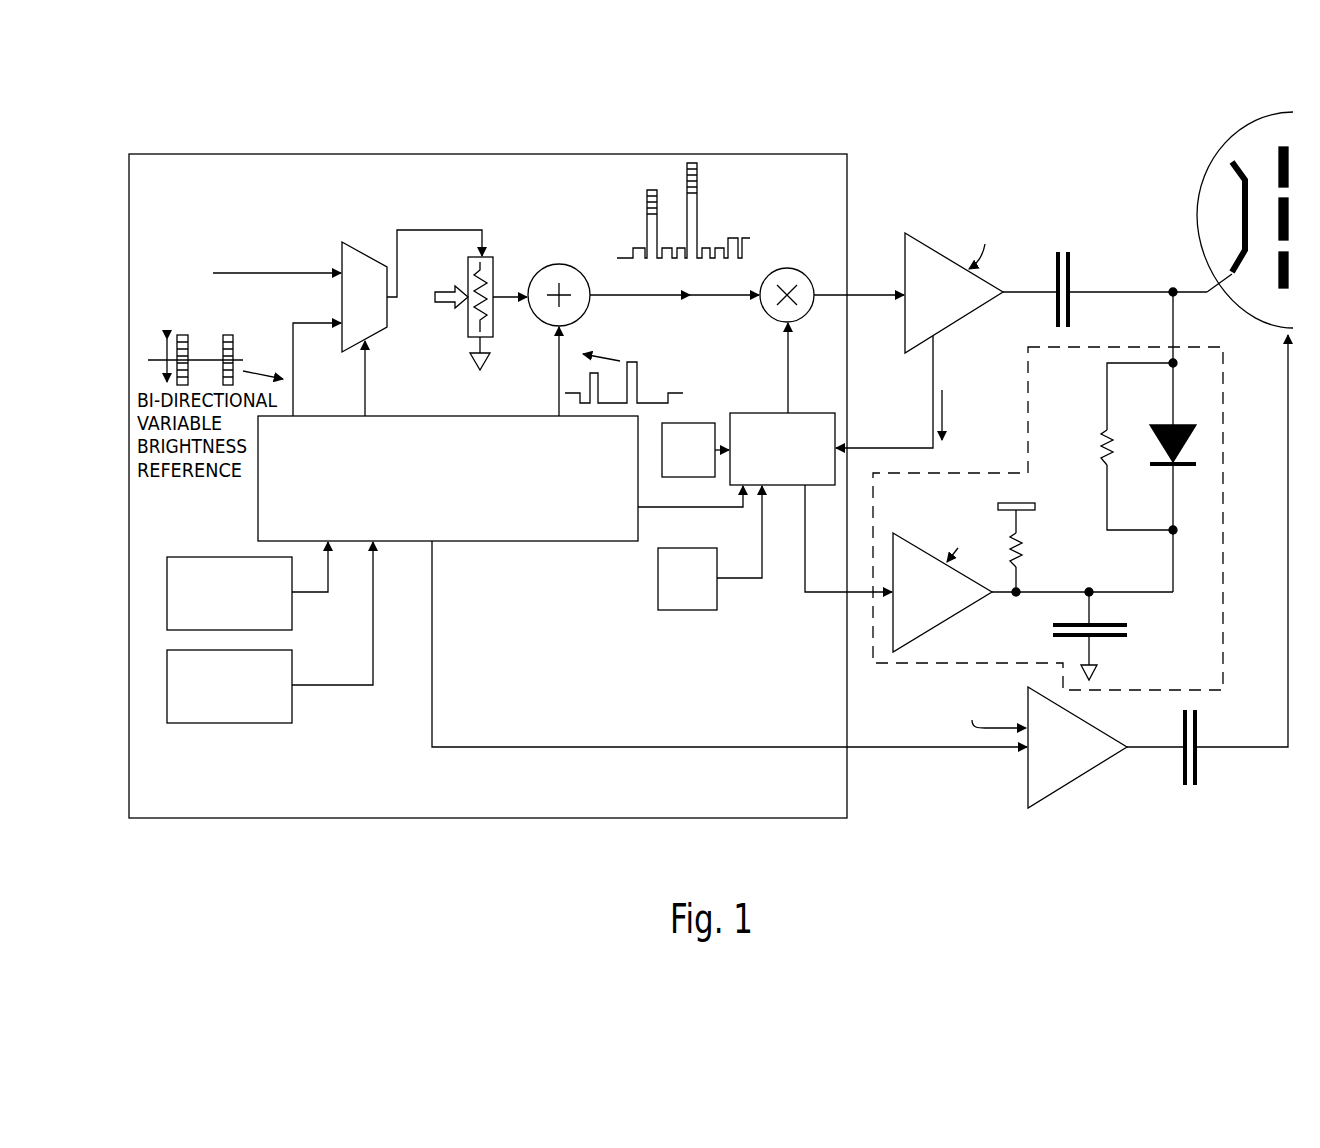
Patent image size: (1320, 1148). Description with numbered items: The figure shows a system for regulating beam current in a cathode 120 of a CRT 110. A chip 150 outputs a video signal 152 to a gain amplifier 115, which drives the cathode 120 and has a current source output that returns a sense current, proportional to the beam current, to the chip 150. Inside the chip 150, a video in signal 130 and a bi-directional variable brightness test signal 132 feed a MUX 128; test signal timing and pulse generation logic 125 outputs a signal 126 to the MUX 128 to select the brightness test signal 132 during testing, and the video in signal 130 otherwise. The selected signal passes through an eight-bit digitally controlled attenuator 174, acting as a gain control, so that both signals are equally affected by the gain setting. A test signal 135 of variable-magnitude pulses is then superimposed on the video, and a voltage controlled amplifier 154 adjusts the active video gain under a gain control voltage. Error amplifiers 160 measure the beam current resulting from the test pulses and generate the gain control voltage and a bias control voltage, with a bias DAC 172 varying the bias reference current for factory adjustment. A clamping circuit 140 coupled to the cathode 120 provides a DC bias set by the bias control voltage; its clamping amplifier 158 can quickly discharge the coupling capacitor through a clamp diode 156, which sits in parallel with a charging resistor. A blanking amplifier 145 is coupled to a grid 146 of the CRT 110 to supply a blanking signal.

The CRT 110 is at (1231, 117).
The gain amplifier 115 is at (1021, 334).
The cathode 120 is at (1226, 180).
The test signal timing and pulse generation logic 125 is at (597, 581).
The signal 126 is at (389, 378).
The MUX 128 is at (384, 258).
The video in signal 130 is at (259, 247).
The bi-directional variable brightness test signal 132 is at (317, 369).
The test signal 135 is at (645, 381).
The clamping circuit 140 is at (1228, 529).
The blanking amplifier 145 is at (1115, 571).
The grid 146 is at (1276, 285).
The chip 150 is at (488, 486).
The video signal 152 is at (504, 293).
The voltage controlled amplifier 154 is at (790, 268).
The clamp diode 156 is at (1163, 473).
The clamping amplifier 158 is at (942, 574).
The error amplifiers 160 is at (777, 502).
The bias DAC 172 is at (690, 612).
The digitally controlled attenuator 174 is at (483, 269).